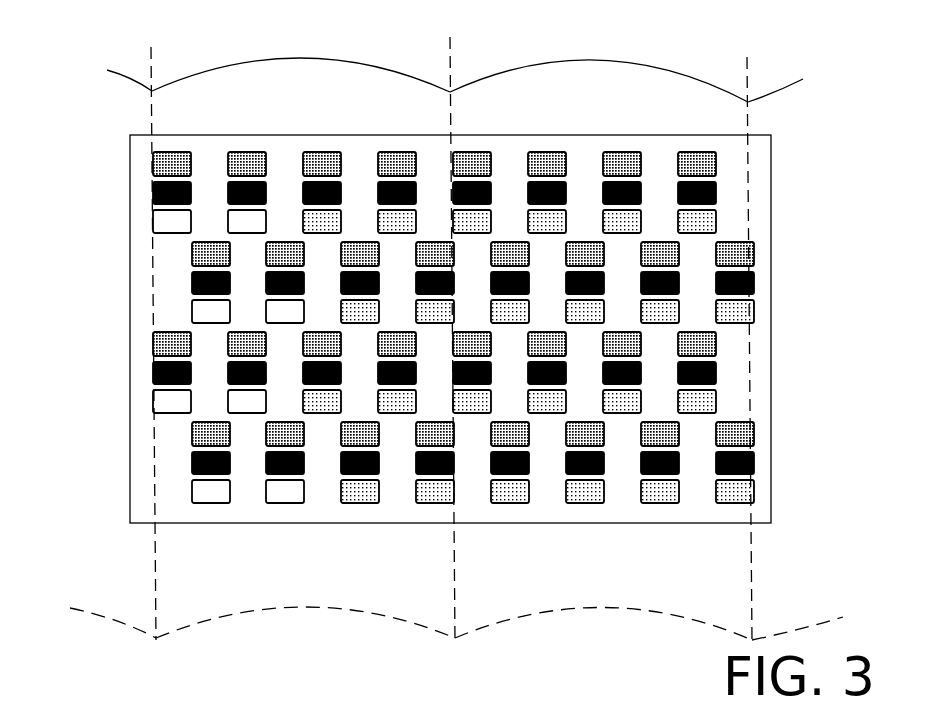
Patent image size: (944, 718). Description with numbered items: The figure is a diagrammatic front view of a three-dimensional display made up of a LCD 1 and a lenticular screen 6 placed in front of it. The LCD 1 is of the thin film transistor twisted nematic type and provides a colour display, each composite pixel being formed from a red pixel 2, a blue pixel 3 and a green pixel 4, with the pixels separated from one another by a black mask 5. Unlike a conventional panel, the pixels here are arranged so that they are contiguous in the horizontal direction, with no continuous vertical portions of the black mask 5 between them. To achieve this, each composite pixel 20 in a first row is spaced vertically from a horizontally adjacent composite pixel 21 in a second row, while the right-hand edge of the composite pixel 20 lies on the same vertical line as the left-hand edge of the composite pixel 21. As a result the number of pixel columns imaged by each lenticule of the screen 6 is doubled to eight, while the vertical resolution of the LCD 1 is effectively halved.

The LCD 1 is at (743, 390).
The red pixel 2 is at (153, 165).
The blue pixel 3 is at (153, 190).
The green pixel 4 is at (153, 223).
The black mask 5 is at (473, 510).
The lenticular screen 6 is at (595, 92).
The composite pixel 20 is at (135, 158).
The composite pixel 21 is at (182, 283).